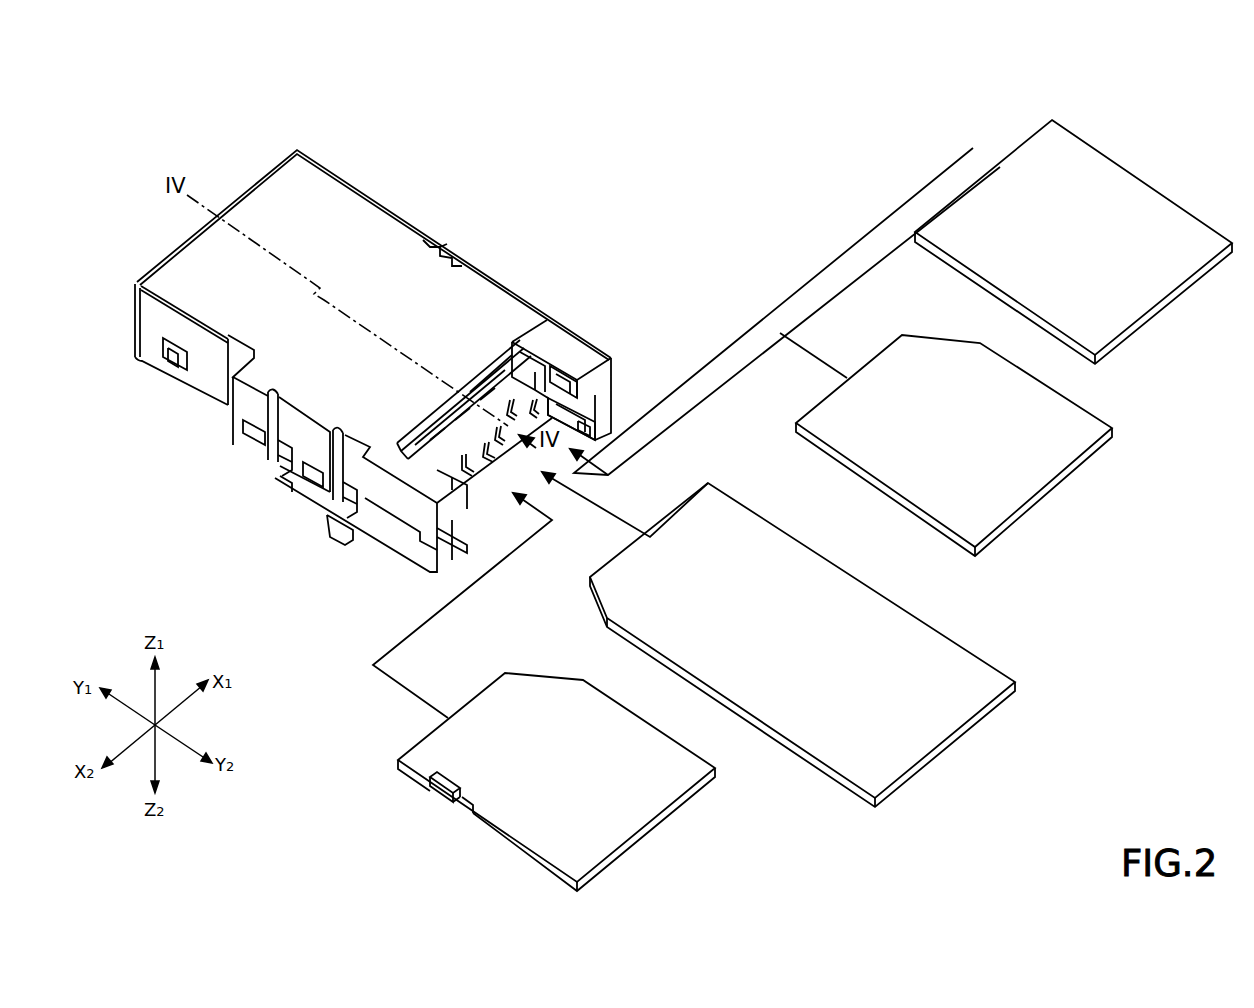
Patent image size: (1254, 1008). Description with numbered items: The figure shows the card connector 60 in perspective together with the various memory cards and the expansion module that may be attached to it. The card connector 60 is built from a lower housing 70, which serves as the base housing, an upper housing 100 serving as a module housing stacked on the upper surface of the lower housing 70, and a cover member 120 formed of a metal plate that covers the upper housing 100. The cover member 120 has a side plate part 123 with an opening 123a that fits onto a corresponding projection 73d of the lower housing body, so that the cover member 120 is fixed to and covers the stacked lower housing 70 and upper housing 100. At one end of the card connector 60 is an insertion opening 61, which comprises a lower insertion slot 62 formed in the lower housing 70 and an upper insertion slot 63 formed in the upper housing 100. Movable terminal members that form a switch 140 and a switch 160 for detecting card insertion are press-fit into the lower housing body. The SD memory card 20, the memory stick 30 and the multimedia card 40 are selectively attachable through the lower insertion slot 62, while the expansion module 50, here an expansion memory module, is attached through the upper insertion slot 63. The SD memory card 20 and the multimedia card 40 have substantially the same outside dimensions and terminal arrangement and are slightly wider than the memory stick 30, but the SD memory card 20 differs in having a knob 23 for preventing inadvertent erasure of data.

The card connector 60 is at (278, 125).
The cover member 120 is at (343, 181).
The opening of side plate part 123a is at (167, 355).
The projection 73d is at (173, 362).
The side plate part 123 is at (280, 418).
The switch 140 is at (281, 483).
The switch 160 is at (360, 514).
The lower housing 70 is at (407, 558).
The upper housing 100 is at (574, 338).
The insertion opening 61 is at (588, 390).
The upper insertion slot 63 is at (583, 390).
The lower insertion slot 62 is at (590, 417).
The expansion module 50 is at (1166, 298).
The multimedia card 40 is at (1046, 489).
The memory stick 30 is at (950, 742).
The SD memory card 20 is at (650, 825).
The knob 23 is at (438, 802).